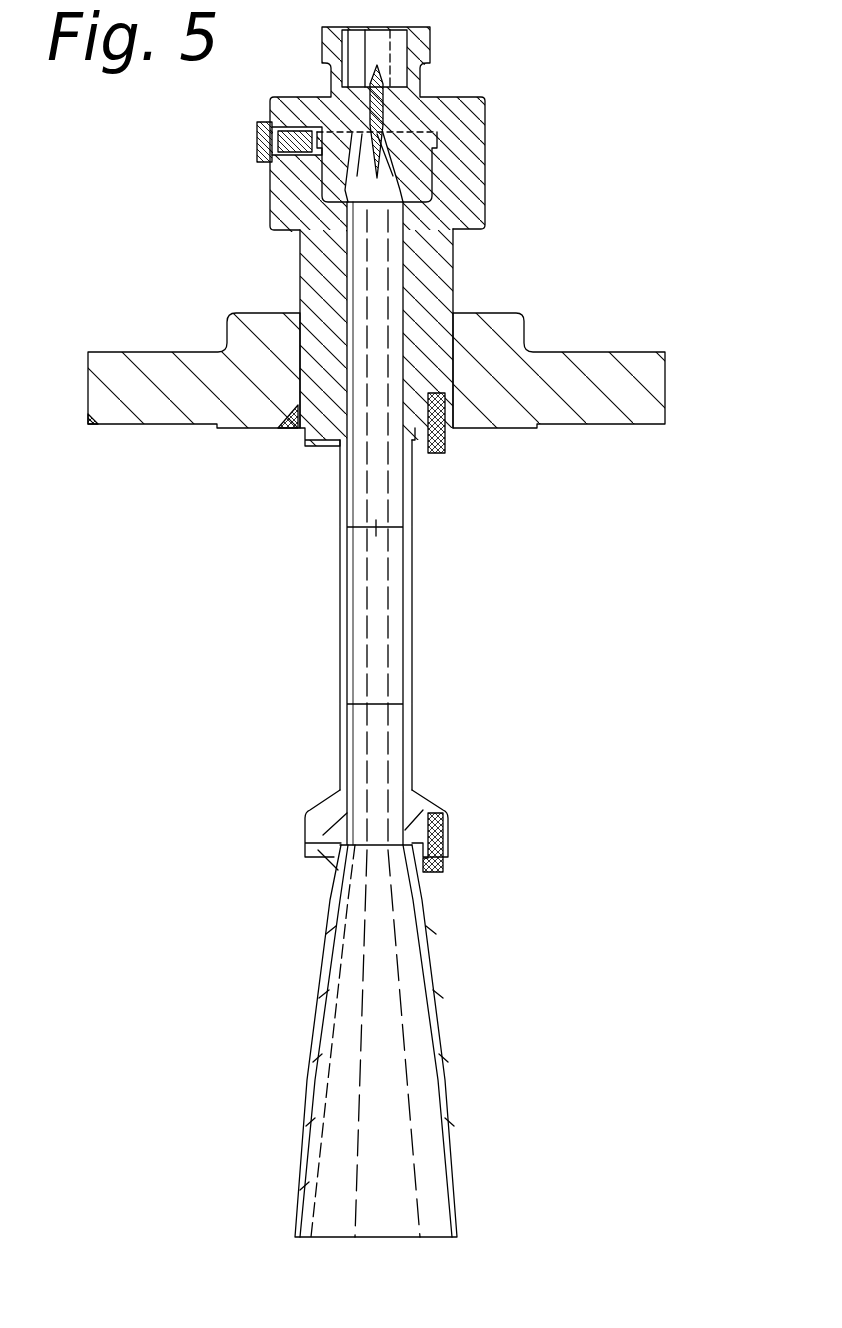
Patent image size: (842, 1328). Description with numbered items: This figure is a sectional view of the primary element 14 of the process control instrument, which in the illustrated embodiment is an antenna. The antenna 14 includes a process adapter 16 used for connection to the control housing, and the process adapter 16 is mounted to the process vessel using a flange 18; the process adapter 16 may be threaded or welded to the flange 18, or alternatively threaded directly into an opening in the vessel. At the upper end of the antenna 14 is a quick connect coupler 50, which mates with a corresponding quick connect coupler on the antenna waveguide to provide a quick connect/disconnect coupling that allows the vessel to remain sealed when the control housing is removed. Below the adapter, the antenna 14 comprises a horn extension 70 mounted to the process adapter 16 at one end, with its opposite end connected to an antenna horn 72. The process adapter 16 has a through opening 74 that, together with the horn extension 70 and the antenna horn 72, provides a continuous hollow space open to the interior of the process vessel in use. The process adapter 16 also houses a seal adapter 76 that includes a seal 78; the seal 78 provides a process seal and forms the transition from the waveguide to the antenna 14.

The primary element 14 is at (465, 528).
The process adapter 16 is at (455, 252).
The flange 18 is at (598, 360).
The quick connect coupler 50 is at (415, 55).
The horn extension 70 is at (414, 620).
The antenna horn 72 is at (427, 982).
The through opening 74 is at (298, 252).
The seal adapter 76 is at (385, 112).
The seal 78 is at (440, 105).